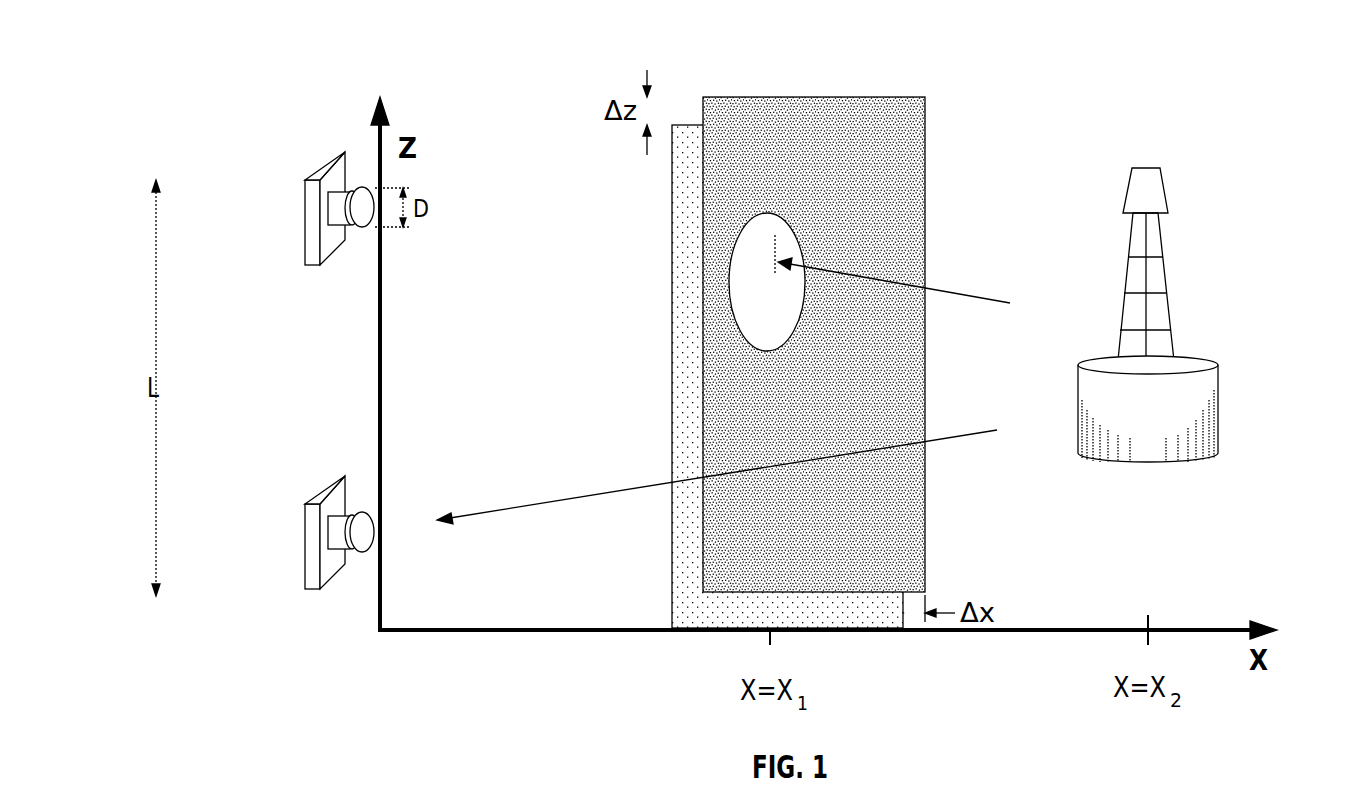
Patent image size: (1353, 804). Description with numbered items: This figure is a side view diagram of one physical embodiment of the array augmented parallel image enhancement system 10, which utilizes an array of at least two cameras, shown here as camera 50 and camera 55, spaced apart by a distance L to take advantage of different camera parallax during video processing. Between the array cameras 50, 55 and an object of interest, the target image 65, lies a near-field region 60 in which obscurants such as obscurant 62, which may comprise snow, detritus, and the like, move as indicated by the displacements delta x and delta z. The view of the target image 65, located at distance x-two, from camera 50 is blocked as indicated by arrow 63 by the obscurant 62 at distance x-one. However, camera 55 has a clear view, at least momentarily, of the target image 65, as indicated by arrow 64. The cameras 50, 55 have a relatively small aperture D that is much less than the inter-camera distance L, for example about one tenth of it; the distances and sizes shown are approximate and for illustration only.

The array augmented parallel image enhancement (APIE) system 10 is at (1078, 80).
The camera 50 is at (325, 165).
The camera 55 is at (325, 490).
The near-field region 60 is at (873, 97).
The obscurant 62 is at (728, 278).
The arrow 63 is at (968, 296).
The arrow 64 is at (968, 435).
The target image 65 is at (1195, 358).